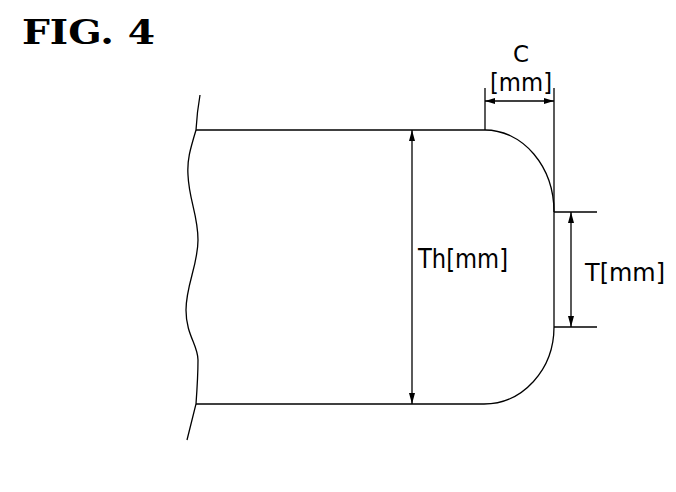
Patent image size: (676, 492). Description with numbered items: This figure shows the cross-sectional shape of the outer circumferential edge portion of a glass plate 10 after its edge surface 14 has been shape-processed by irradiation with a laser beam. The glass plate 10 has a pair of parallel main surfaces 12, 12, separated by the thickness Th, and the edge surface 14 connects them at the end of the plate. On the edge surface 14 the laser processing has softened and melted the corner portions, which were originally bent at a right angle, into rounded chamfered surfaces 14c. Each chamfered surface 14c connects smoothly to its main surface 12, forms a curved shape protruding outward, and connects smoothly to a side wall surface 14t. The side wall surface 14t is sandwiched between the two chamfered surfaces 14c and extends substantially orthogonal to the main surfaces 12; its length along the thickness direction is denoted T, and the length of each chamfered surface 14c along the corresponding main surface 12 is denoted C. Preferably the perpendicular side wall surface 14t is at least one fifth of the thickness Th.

The glass plate 10 is at (404, 237).
The main surfaces 12 is at (296, 130).
The edge surface 14 is at (553, 293).
The chamfered surfaces 14c is at (532, 152).
The side wall surface 14t is at (554, 280).